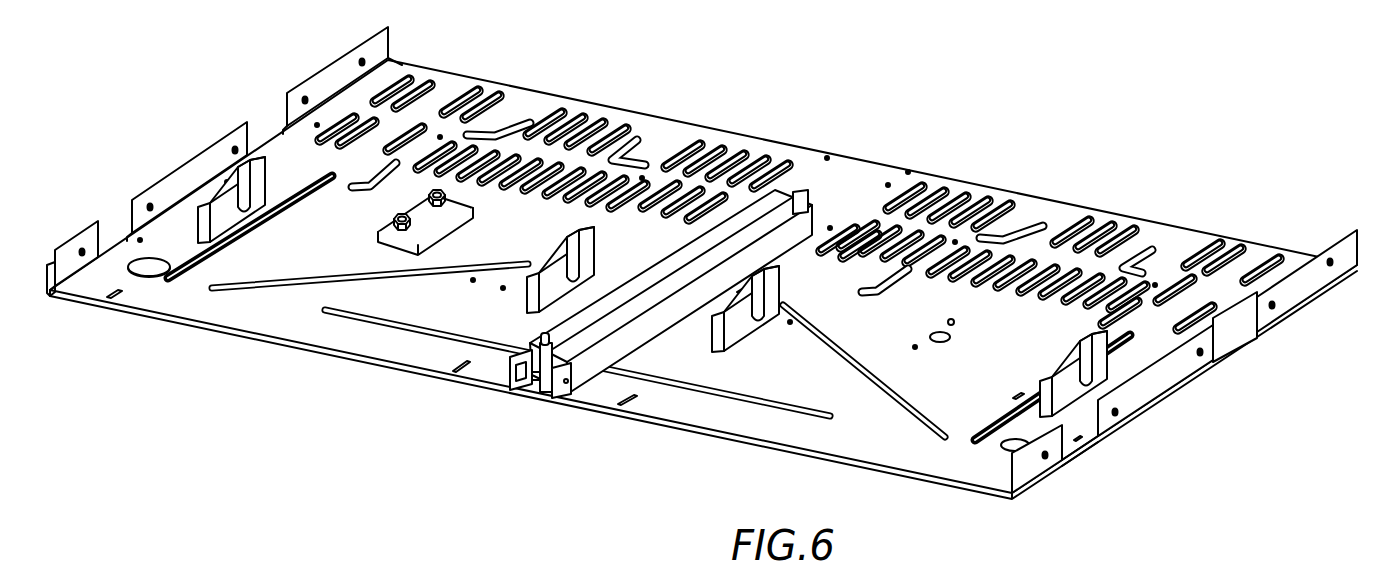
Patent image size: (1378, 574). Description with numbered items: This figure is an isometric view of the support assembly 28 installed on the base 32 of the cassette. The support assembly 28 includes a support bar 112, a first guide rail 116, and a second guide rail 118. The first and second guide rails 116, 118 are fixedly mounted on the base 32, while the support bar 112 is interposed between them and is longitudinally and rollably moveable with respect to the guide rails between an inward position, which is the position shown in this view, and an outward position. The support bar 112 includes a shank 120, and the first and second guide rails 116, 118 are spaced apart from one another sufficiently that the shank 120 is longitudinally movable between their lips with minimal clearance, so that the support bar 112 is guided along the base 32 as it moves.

The base 32 is at (862, 155).
The first guide rail 116 is at (588, 393).
The support assembly 28 is at (503, 397).
The second guide rail 118 is at (505, 368).
The shank 120 is at (543, 397).
The support bar 112 is at (558, 393).